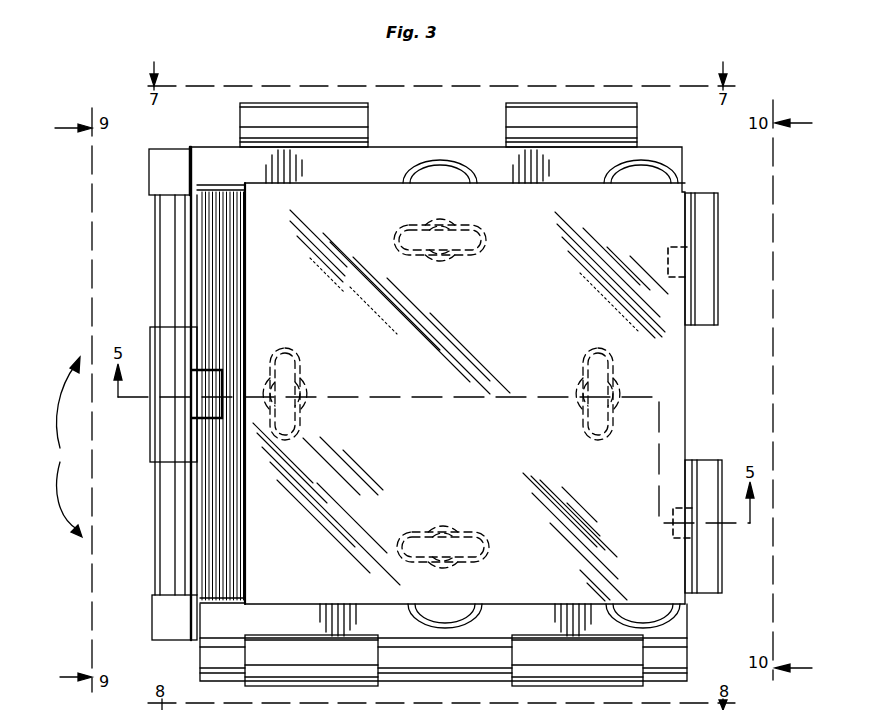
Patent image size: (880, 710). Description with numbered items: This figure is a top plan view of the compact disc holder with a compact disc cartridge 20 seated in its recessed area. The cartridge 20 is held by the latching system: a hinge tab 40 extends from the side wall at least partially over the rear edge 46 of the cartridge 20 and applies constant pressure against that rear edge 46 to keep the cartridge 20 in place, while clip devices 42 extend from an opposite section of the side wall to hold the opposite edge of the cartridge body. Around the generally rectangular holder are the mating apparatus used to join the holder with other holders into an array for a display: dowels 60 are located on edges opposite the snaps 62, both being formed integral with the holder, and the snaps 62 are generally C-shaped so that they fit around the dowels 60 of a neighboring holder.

The compact disc cartridge 20 is at (615, 240).
The hinge tab 40 is at (207, 390).
The clip devices 42 is at (683, 258).
The rear edge 46 is at (218, 512).
The dowels 60 is at (58, 447).
The snaps 62 is at (281, 98).